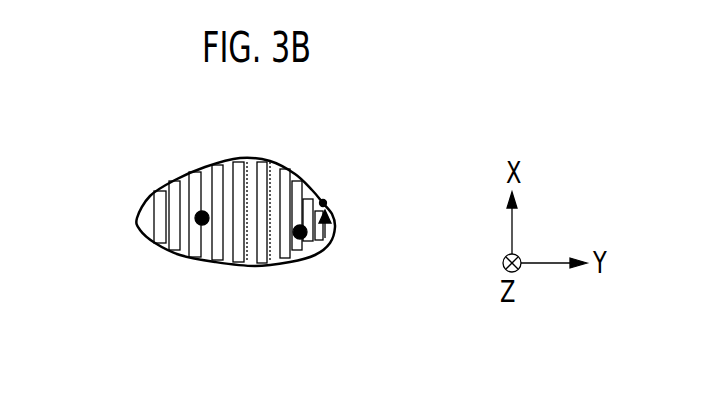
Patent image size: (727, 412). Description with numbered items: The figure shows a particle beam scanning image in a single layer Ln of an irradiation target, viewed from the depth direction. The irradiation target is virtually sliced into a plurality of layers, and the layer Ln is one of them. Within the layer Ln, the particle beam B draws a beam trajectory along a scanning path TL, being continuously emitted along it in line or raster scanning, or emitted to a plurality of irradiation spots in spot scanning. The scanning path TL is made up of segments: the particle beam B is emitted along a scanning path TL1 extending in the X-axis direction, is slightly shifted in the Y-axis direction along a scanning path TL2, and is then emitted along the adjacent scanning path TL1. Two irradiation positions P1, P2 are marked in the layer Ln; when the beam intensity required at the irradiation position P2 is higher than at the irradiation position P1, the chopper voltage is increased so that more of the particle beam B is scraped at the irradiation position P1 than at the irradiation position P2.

The layer Ln is at (147, 202).
The scanning path TL is at (240, 180).
The scanning path extending in the X-axis direction TL1 is at (293, 183).
The scanning path for shifting in the Y-axis direction TL2 is at (274, 263).
The particle beam B is at (324, 201).
The irradiation position P1 is at (200, 224).
The irradiation position P2 is at (304, 237).